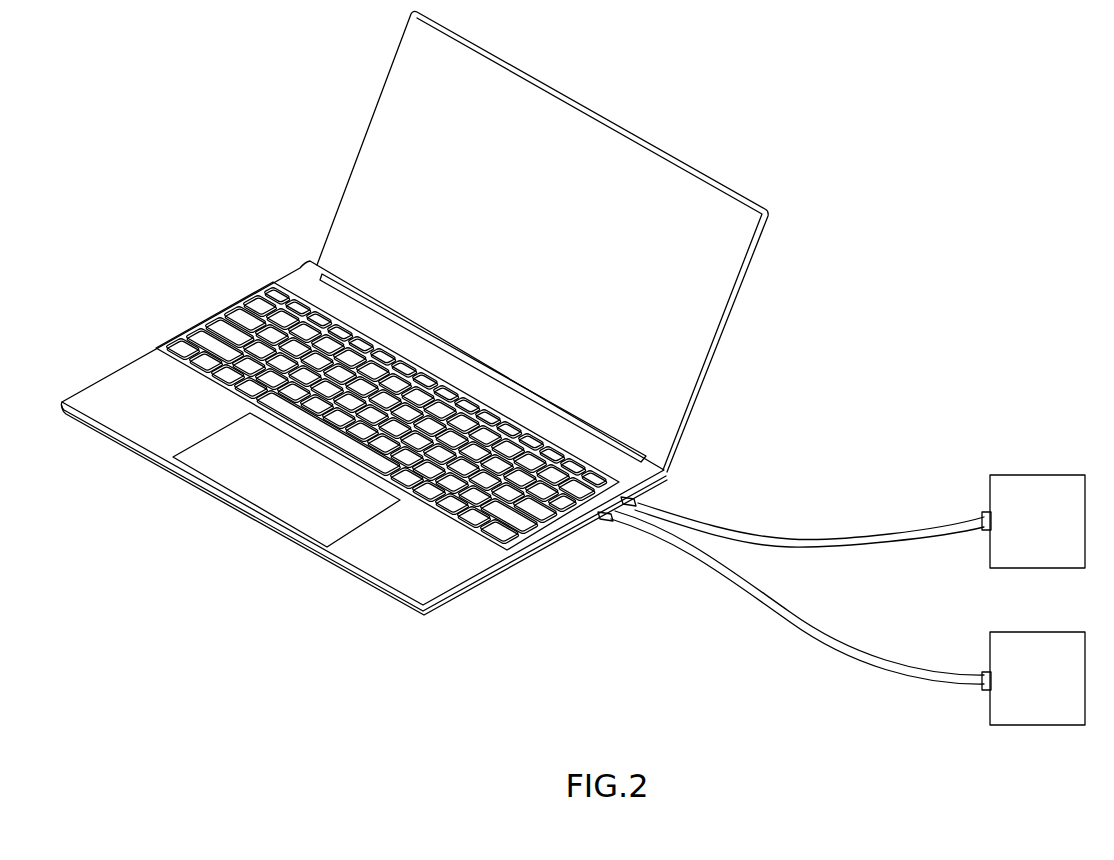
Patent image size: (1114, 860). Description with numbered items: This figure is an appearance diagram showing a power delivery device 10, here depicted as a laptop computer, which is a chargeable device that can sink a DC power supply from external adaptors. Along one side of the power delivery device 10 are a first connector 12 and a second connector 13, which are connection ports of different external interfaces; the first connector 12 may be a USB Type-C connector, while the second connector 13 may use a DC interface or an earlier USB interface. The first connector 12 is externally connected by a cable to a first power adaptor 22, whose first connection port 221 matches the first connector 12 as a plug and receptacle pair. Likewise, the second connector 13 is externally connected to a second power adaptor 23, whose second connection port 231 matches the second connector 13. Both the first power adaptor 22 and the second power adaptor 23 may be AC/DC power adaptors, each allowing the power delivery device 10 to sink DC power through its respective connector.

The power delivery device 10 is at (594, 92).
The first connector 12 is at (640, 500).
The second connector 13 is at (599, 523).
The first power adaptor 22 is at (1068, 476).
The first connection port 221 is at (985, 511).
The second power adaptor 23 is at (1068, 633).
The second connection port 231 is at (985, 671).